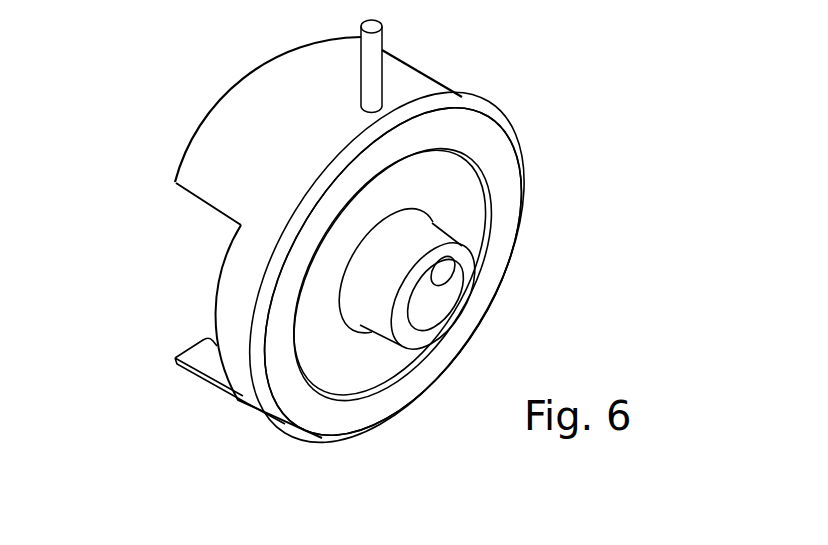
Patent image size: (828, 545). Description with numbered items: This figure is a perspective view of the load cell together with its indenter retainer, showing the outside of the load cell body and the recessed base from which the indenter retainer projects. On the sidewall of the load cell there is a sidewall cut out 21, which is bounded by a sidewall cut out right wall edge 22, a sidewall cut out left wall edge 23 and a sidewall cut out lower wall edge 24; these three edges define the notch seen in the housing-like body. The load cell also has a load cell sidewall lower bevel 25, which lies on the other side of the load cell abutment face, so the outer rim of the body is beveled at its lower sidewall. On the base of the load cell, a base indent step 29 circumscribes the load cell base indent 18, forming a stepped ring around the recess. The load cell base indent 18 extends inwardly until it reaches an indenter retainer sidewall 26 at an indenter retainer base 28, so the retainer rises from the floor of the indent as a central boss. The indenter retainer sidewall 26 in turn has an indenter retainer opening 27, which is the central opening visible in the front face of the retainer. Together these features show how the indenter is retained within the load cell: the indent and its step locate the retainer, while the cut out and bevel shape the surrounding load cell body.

The load cell base indent 18 is at (465, 205).
The sidewall cut out 21 is at (177, 183).
The sidewall cut out right wall edge 22 is at (195, 197).
The sidewall cut out left wall edge 23 is at (205, 388).
The sidewall cut out lower wall edge 24 is at (217, 298).
The load cell sidewall lower bevel 25 is at (433, 108).
The indenter retainer sidewall 26 is at (468, 278).
The indenter retainer opening 27 is at (430, 308).
The indenter retainer base 28 is at (361, 322).
The base indent step 29 is at (477, 177).